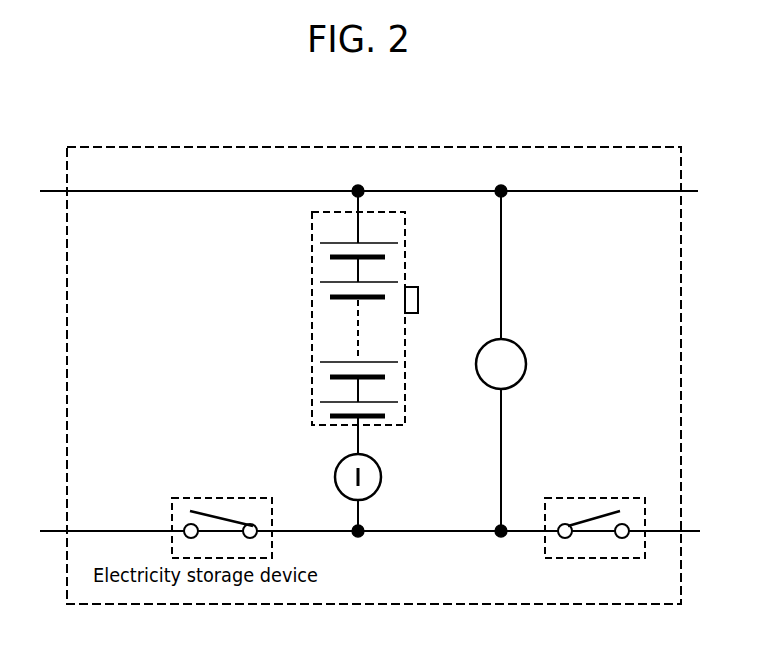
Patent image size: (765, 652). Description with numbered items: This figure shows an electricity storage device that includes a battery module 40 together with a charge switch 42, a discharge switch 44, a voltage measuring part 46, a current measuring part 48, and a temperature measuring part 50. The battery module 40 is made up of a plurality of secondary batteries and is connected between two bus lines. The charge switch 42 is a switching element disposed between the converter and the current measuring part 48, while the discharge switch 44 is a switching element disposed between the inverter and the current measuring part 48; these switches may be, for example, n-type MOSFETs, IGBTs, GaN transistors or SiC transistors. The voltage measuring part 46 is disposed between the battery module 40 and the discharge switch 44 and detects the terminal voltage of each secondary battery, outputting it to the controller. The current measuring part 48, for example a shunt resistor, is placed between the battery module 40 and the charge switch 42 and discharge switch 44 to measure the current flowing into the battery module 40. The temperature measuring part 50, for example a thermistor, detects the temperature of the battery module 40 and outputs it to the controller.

The battery module 40 is at (312, 242).
The charge switch 42 is at (205, 497).
The discharge switch 44 is at (580, 497).
The voltage measuring part 46 is at (518, 344).
The current measuring part 48 is at (380, 487).
The temperature measuring part 50 is at (411, 313).